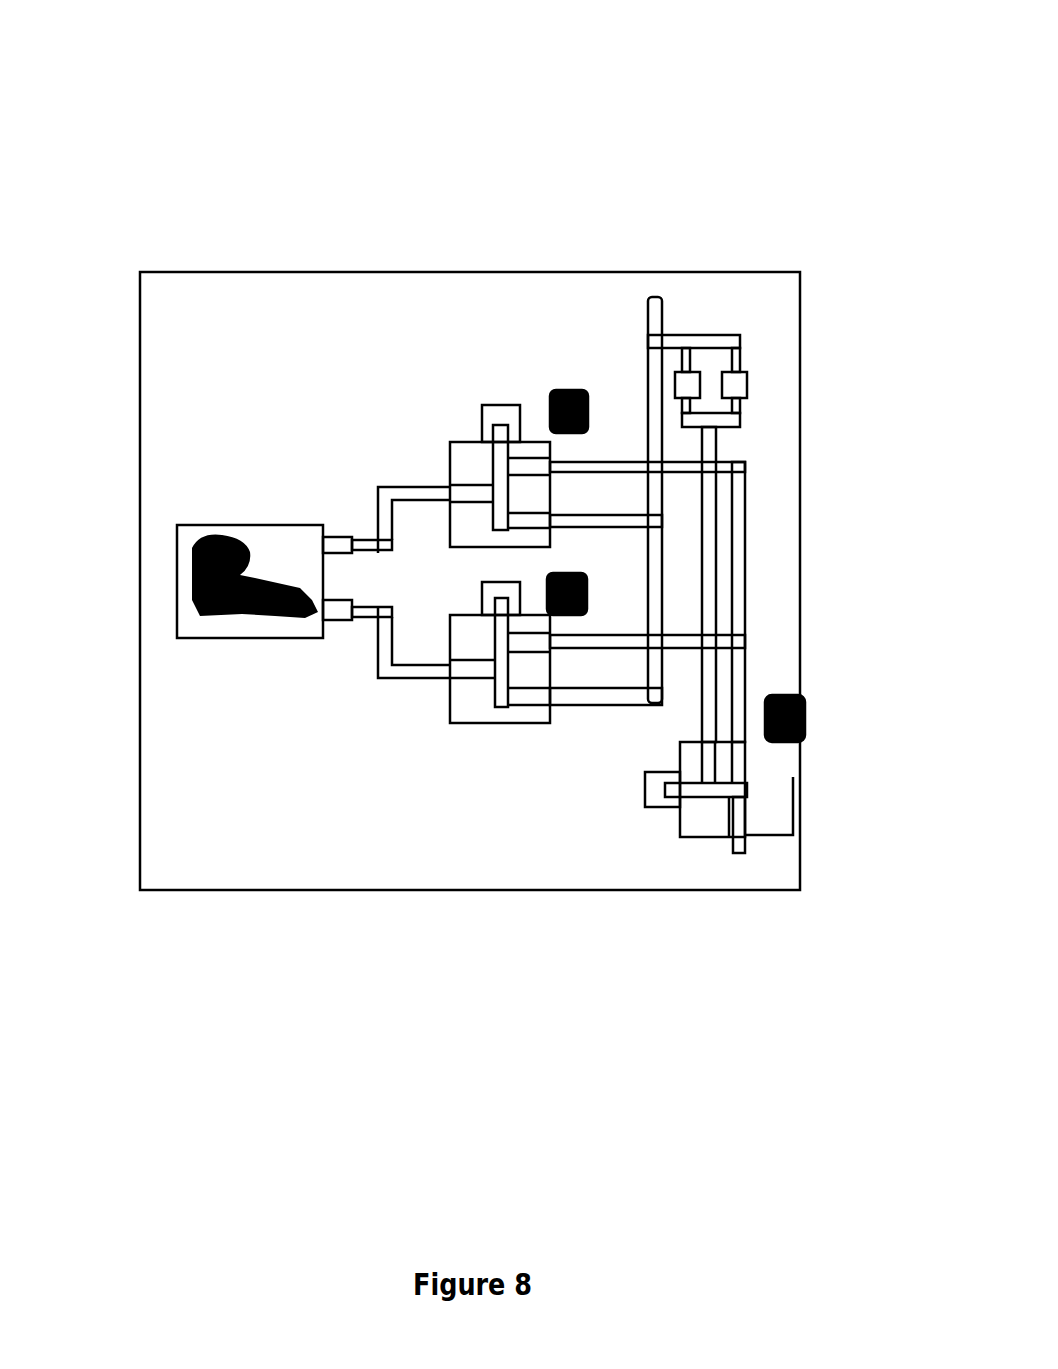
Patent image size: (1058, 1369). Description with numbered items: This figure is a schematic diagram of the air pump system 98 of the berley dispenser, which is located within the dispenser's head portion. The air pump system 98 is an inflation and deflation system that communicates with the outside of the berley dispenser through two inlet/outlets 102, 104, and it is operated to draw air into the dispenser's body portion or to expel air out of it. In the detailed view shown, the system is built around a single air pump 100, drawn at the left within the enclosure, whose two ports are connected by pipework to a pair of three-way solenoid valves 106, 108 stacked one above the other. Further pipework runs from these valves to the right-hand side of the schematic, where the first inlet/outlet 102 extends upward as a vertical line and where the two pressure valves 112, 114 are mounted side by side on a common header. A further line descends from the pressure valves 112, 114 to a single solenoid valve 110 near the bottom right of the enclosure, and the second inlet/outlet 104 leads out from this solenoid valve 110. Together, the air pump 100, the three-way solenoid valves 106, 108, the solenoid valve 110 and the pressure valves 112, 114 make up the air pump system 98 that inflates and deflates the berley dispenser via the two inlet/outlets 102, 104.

The air pump system 98 is at (708, 177).
The air pump 100 is at (205, 522).
The inlet/outlet 102 is at (653, 297).
The inlet/outlet 104 is at (735, 853).
The 3-way solenoid valve 106 is at (452, 445).
The 3-way solenoid valve 108 is at (465, 723).
The solenoid valve 110 is at (645, 805).
The pressure valve 112 is at (687, 388).
The pressure valve 114 is at (728, 388).